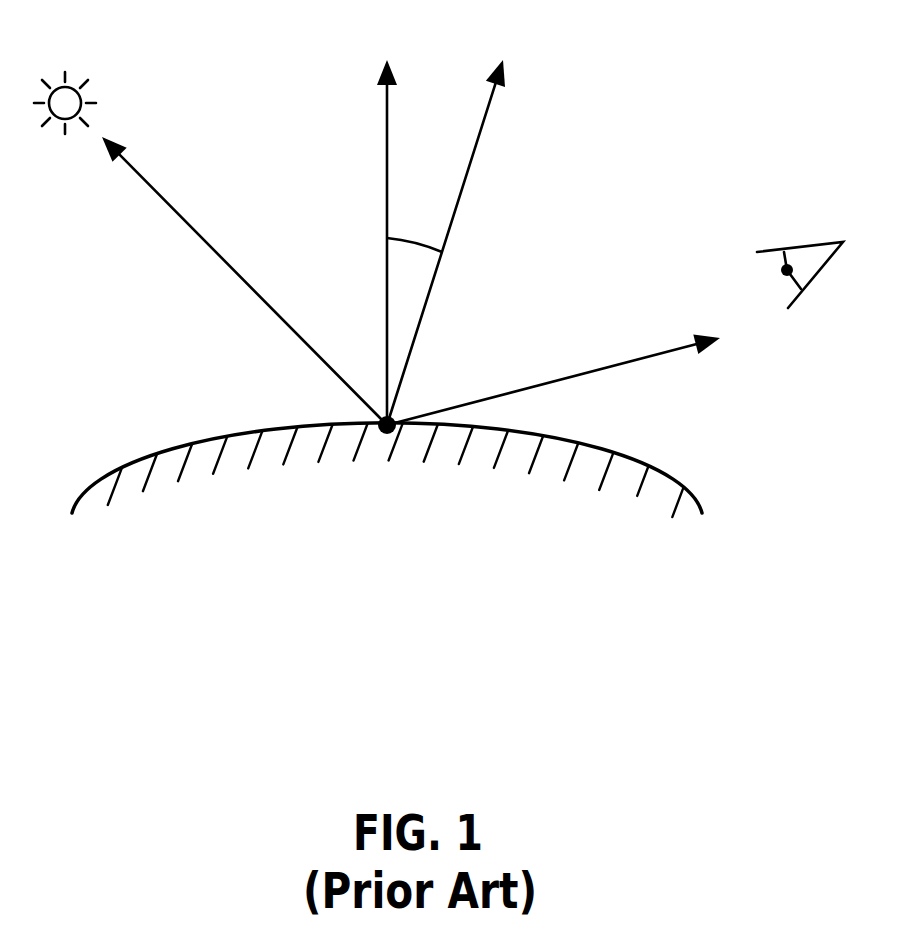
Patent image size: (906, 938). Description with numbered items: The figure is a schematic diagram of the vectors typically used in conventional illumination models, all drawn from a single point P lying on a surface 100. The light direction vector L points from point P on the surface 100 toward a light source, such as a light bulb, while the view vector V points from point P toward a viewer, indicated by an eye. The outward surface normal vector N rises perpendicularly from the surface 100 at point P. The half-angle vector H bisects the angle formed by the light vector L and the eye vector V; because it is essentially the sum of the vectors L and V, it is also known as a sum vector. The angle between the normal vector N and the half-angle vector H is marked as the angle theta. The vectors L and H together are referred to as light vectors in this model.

The surface 100 is at (630, 458).
The light direction vector L is at (210, 248).
The outward surface normal vector N is at (392, 218).
The half-angle vector H is at (458, 218).
The view vector V is at (615, 333).